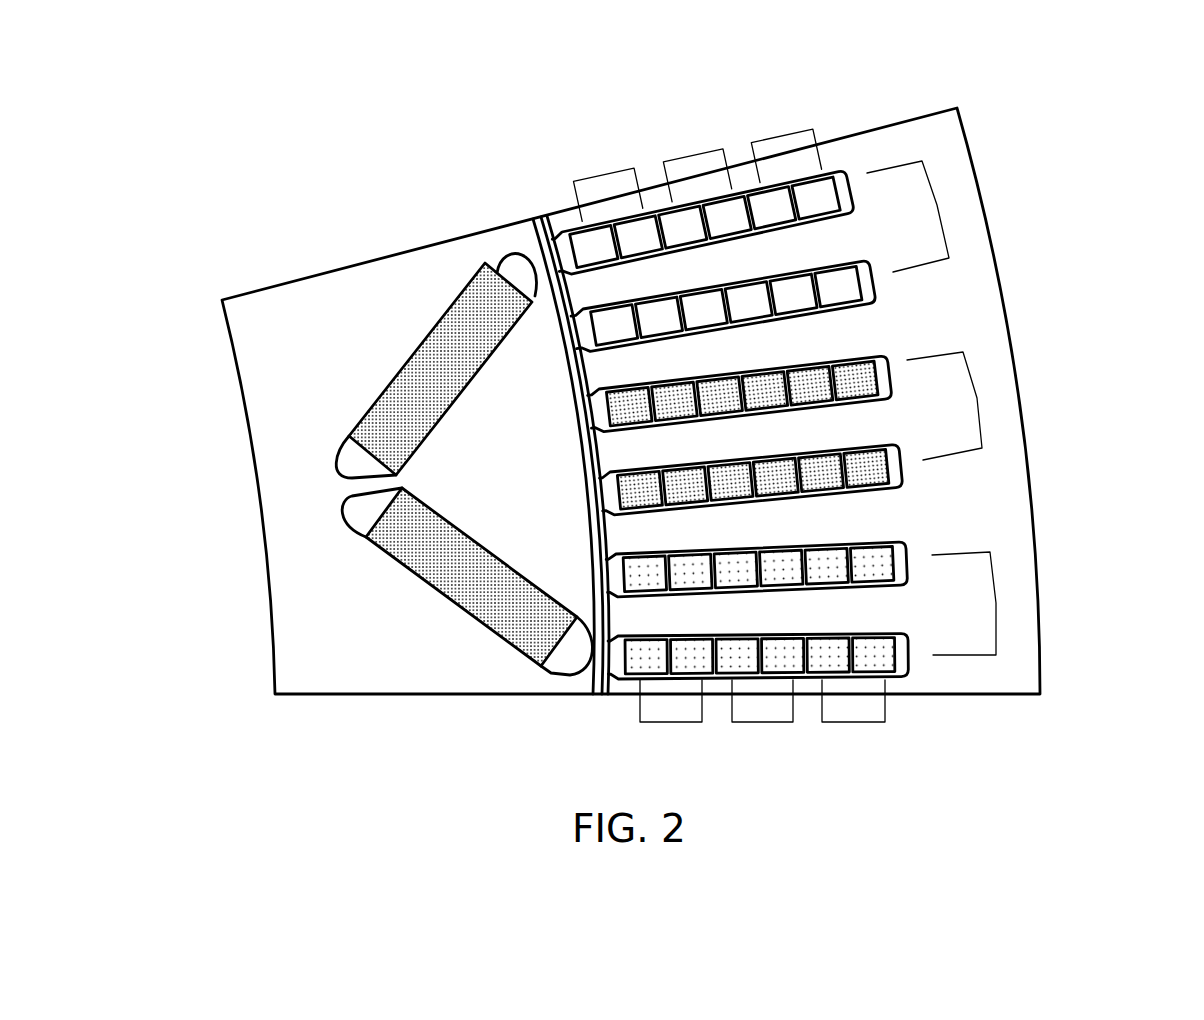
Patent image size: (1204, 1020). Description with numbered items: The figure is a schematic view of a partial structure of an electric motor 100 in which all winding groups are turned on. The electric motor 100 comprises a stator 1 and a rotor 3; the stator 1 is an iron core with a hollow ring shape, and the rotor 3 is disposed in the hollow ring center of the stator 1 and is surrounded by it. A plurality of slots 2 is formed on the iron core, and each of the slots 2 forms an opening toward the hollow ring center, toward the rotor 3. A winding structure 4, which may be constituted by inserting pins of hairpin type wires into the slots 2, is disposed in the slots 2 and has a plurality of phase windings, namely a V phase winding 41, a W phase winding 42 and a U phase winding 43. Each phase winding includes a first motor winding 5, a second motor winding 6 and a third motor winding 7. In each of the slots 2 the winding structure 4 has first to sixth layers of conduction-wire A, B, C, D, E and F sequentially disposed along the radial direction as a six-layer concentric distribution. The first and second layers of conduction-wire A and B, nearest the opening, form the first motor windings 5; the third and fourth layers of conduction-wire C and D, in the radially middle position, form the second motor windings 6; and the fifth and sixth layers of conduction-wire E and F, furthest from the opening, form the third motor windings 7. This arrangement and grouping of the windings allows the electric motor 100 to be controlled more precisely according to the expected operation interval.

The electric motor 100 is at (1158, 99).
The stator 1 is at (948, 142).
The slots 2 is at (553, 253).
The rotor 3 is at (343, 287).
The winding structure 4 is at (1106, 281).
The V phase winding 41 is at (811, 257).
The W phase winding 42 is at (977, 398).
The U phase winding 43 is at (996, 603).
The first motor winding 5 is at (637, 447).
The second motor winding 6 is at (728, 436).
The third motor winding 7 is at (818, 427).
The first layer of conduction-wire A is at (585, 252).
The second layer of conduction-wire B is at (630, 242).
The third layer of conduction-wire C is at (673, 232).
The fourth layer of conduction-wire D is at (717, 222).
The fifth layer of conduction-wire E is at (765, 212).
The sixth layer of conduction-wire F is at (810, 200).